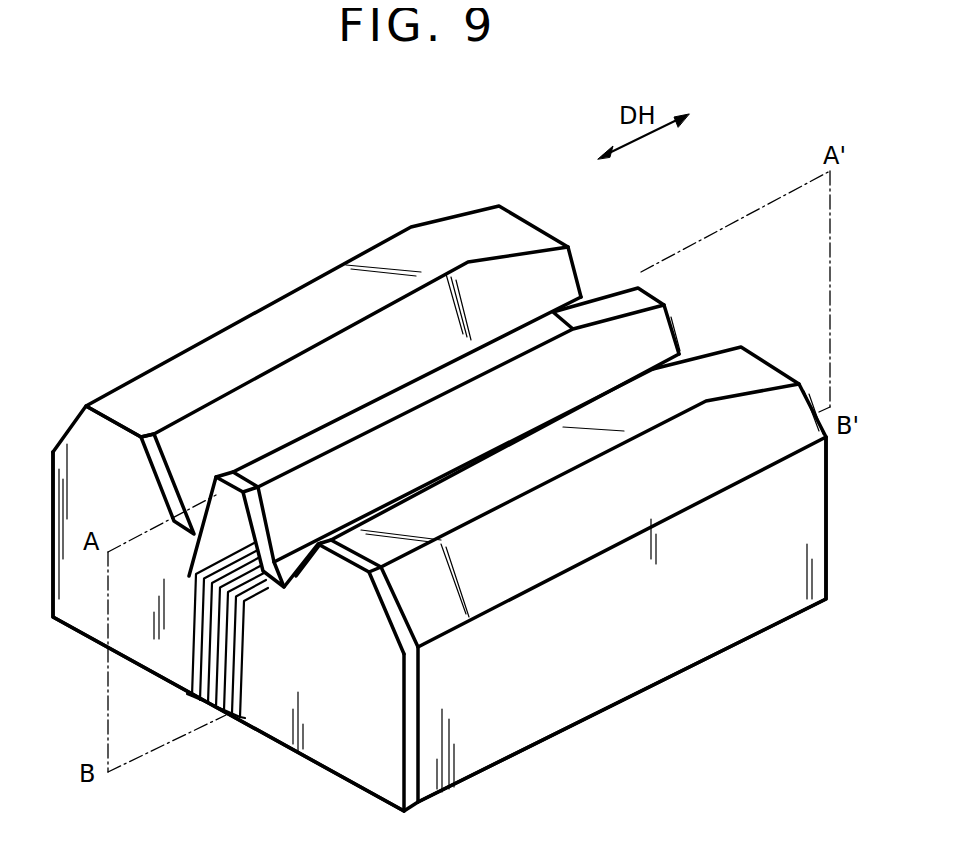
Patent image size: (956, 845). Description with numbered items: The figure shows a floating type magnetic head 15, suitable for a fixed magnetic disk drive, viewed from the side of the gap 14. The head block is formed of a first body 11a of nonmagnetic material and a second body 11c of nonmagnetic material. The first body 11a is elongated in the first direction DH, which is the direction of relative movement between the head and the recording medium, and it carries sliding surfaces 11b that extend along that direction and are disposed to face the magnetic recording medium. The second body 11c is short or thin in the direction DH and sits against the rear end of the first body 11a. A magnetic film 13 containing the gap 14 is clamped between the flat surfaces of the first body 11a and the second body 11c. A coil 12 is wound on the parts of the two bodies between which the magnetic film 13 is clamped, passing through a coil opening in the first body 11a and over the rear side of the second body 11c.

The first body 11a is at (465, 743).
The sliding surfaces 11b is at (352, 287).
The second body 11c is at (340, 742).
The coil 12 is at (178, 688).
The magnetic film 13 is at (118, 407).
The gap 14 is at (228, 474).
The magnetic head 15 is at (537, 747).